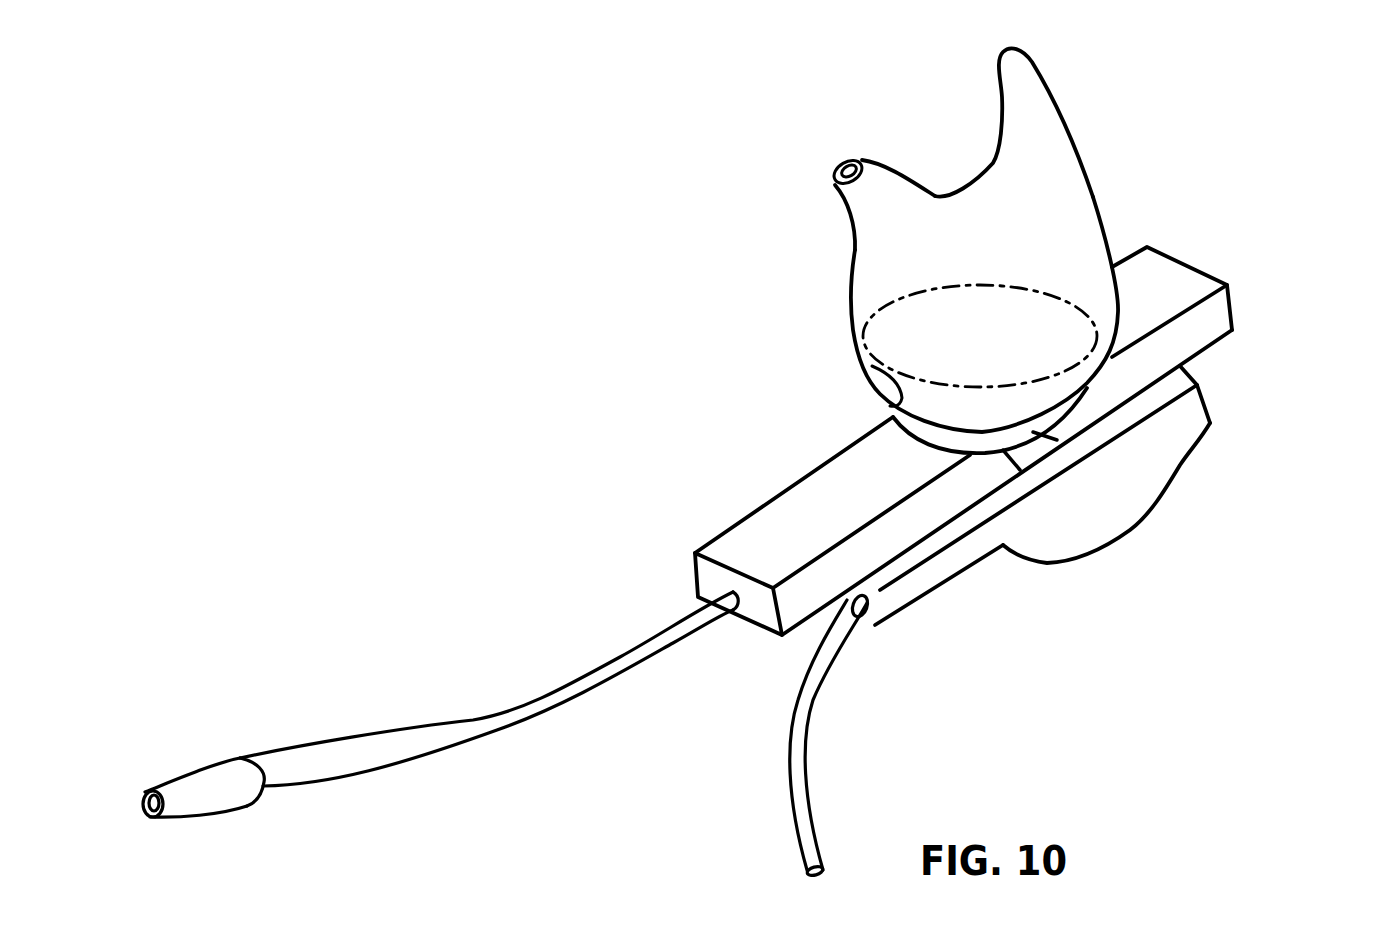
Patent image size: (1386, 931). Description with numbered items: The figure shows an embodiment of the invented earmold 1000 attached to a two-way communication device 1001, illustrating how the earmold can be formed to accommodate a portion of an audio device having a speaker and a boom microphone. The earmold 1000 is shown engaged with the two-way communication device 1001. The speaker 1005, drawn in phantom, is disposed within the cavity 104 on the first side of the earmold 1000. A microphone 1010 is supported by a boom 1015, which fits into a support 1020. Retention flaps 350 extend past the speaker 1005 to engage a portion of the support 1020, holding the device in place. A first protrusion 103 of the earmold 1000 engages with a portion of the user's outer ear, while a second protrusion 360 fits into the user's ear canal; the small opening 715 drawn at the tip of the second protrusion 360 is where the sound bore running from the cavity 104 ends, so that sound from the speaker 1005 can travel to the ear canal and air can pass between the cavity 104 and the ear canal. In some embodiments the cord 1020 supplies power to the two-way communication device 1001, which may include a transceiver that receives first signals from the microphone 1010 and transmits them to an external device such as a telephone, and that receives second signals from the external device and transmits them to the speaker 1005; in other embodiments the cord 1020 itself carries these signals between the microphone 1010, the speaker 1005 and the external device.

The first protrusion 103 is at (1020, 78).
The earmold 1000 is at (1077, 147).
The nozzle ring 715 is at (836, 180).
The second protrusion 360 is at (851, 196).
The speaker 1005 is at (1060, 307).
The cavity 104 is at (898, 386).
The two-way communication device 1001 is at (1220, 358).
The retention flaps 350 is at (1036, 432).
The support 1020 is at (787, 507).
The boom 1015 is at (473, 720).
The microphone 1010 is at (202, 767).